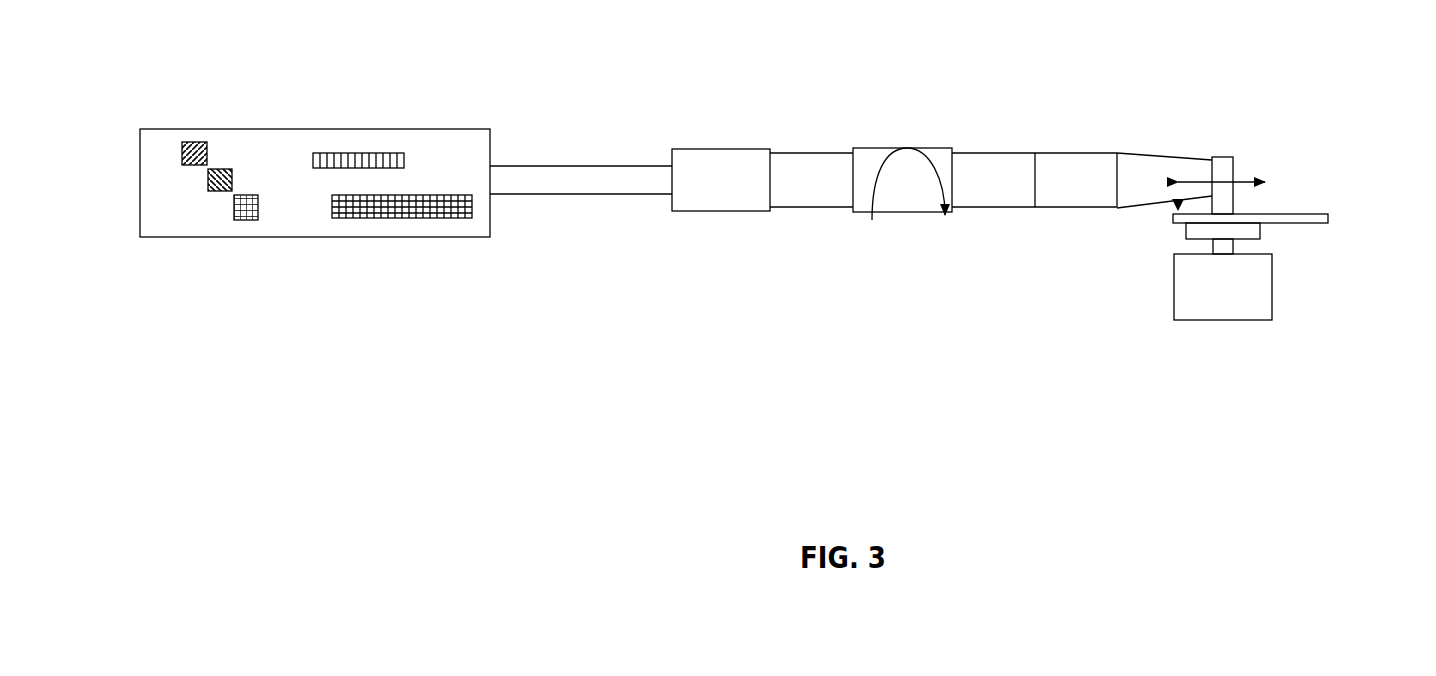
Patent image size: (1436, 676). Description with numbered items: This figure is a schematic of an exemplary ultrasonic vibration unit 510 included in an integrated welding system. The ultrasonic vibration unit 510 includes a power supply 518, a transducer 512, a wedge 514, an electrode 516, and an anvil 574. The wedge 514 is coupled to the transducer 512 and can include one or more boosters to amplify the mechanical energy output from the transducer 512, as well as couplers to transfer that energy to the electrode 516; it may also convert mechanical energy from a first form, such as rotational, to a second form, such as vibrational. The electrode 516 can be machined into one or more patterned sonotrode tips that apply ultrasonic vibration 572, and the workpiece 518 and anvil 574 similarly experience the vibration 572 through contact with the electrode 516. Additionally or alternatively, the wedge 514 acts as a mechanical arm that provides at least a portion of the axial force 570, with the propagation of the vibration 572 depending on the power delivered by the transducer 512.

The ultrasonic vibration unit 510 is at (238, 87).
The transducer 512 is at (723, 217).
The wedge 514 is at (858, 225).
The electrode 516 is at (1225, 173).
The power supply 518 is at (225, 248).
The axial force 570 is at (1226, 327).
The ultrasonic vibration 572 is at (1270, 185).
The anvil 574 is at (1218, 242).